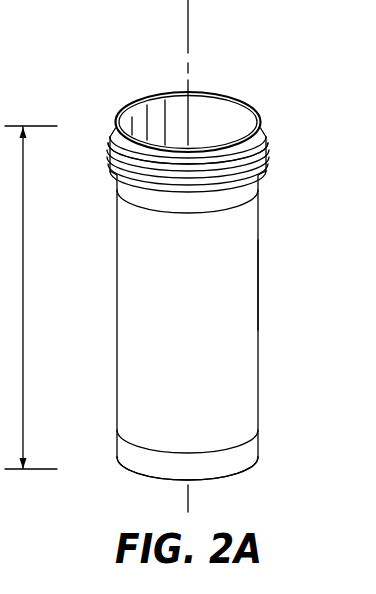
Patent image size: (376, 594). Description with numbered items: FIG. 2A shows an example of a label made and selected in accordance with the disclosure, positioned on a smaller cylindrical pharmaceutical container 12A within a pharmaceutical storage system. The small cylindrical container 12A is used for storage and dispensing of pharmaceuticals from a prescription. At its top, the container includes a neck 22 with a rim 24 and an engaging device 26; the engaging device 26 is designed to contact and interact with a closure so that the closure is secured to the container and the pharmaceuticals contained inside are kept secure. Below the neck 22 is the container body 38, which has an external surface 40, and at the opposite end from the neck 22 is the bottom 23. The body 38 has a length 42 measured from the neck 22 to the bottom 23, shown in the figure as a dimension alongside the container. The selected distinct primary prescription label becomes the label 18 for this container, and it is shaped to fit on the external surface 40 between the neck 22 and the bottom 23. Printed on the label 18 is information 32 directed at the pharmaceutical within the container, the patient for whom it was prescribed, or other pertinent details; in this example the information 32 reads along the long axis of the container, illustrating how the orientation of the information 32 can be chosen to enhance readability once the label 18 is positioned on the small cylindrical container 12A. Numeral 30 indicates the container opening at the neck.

The small cylindrical container 12A is at (278, 329).
The label 18 is at (245, 216).
The neck 22 is at (273, 117).
The bottom 23 is at (128, 466).
The rim 24 is at (110, 152).
The engaging device 26 is at (117, 131).
The opening 30 is at (156, 117).
The information 32 is at (128, 289).
The body 38 is at (310, 274).
The external surface 40 is at (250, 448).
The length 42 is at (24, 357).